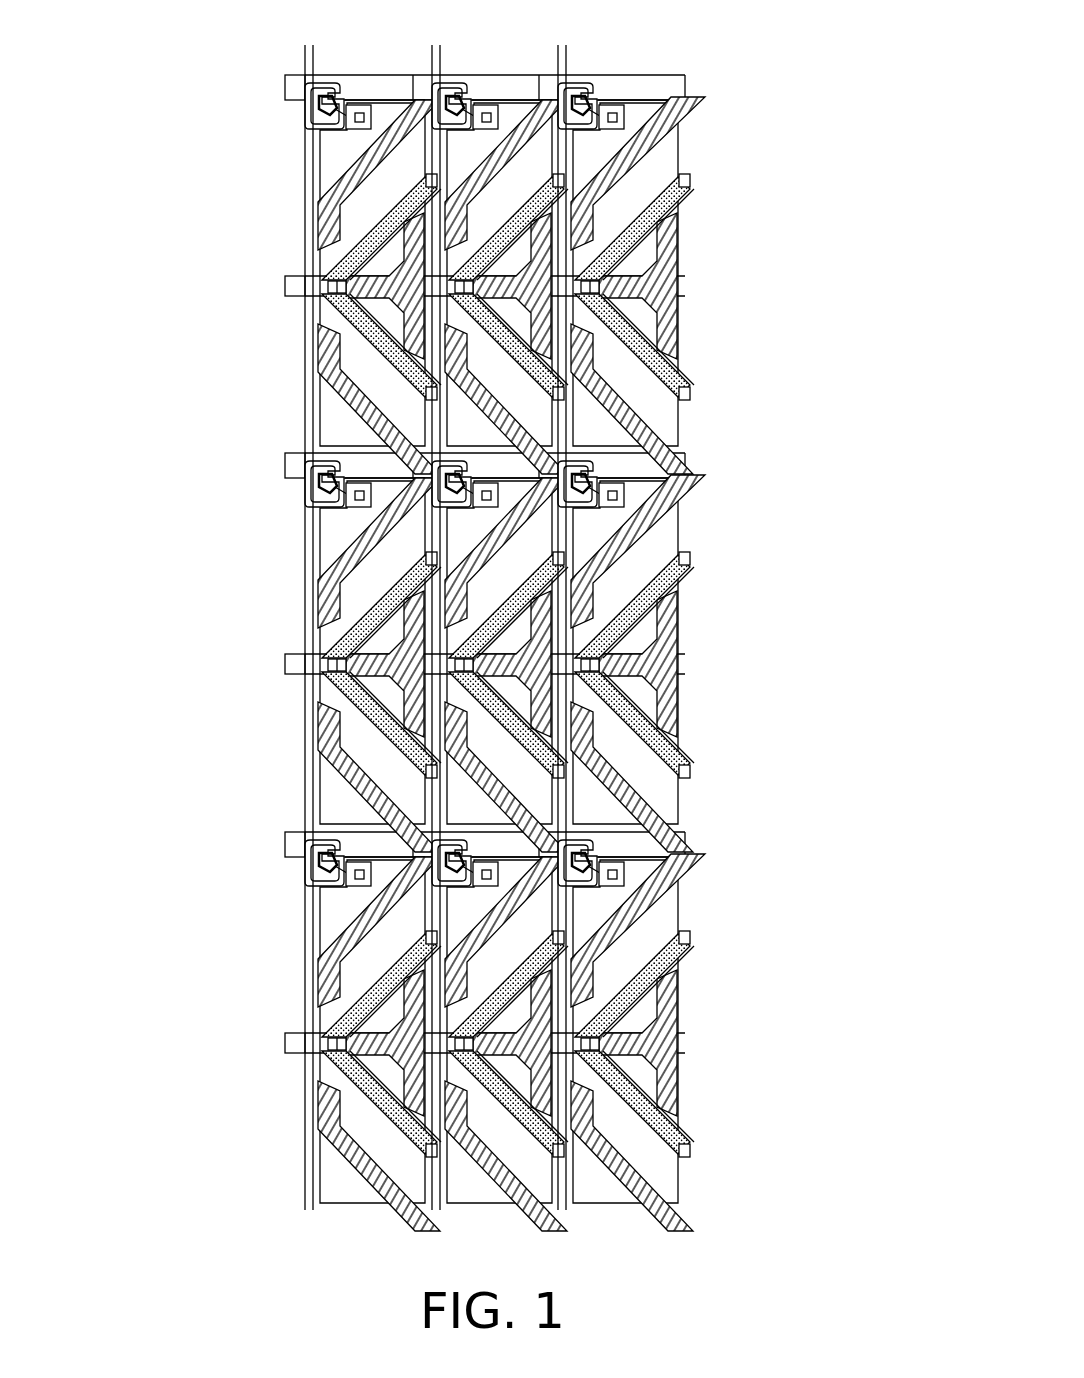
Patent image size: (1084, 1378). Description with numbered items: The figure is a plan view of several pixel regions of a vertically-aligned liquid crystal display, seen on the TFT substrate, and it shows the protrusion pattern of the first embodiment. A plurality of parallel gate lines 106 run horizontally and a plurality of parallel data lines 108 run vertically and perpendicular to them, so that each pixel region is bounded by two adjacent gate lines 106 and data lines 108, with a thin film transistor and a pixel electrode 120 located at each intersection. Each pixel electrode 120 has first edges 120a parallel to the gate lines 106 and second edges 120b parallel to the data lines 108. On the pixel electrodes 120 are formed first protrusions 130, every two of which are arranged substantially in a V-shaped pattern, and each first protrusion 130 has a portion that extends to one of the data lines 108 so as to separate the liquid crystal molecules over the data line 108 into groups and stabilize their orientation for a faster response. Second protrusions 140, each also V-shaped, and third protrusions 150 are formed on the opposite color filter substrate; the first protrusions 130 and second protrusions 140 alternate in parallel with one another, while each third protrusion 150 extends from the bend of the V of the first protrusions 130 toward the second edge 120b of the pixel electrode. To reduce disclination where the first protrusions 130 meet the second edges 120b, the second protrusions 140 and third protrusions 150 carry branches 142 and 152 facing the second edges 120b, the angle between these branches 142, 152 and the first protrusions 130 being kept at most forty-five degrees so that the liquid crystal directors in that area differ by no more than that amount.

The gate line 106 is at (298, 96).
The data line 108 is at (432, 58).
The pixel electrode 120 is at (508, 122).
The first edge of pixel electrode 120a is at (630, 100).
The second edge of pixel electrode 120b is at (678, 157).
The first protrusion 130 is at (690, 180).
The second protrusion 140 is at (338, 392).
The branch of second protrusion 142 is at (320, 340).
The third protrusion 150 is at (630, 294).
The branch of third protrusion 152 is at (673, 250).